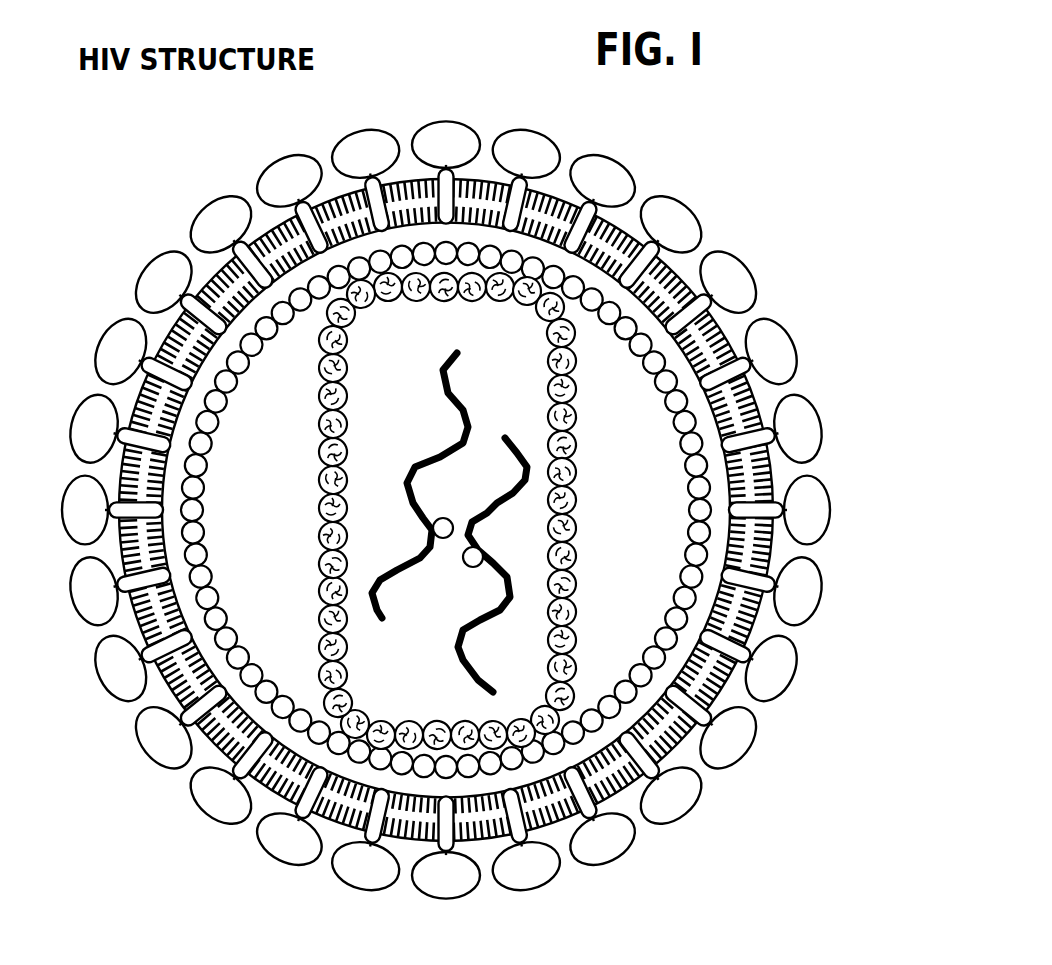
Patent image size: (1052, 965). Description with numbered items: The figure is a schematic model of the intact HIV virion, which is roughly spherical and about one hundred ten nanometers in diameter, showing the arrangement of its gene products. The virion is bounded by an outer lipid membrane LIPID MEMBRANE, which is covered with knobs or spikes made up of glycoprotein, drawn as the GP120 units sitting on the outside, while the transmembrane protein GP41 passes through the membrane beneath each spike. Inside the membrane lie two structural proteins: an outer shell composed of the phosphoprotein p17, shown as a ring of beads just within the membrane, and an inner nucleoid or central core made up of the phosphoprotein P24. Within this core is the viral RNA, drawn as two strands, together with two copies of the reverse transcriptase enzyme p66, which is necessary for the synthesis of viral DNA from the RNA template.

The glycoprotein knobs or spikes GP120 is at (446, 507).
The transmembrane protein GP41 is at (446, 510).
The outer membrane LIPID MEMBRANE is at (406, 510).
The phosphoprotein outer shell p17 is at (446, 510).
The phosphoprotein inner nucleoid P24 is at (574, 456).
The viral RNA is at (440, 377).
The reverse transcriptase enzyme p66 is at (467, 566).